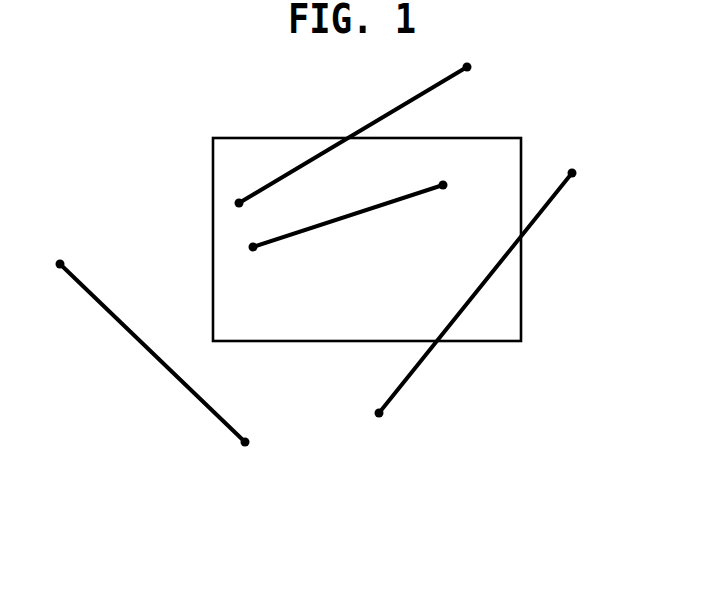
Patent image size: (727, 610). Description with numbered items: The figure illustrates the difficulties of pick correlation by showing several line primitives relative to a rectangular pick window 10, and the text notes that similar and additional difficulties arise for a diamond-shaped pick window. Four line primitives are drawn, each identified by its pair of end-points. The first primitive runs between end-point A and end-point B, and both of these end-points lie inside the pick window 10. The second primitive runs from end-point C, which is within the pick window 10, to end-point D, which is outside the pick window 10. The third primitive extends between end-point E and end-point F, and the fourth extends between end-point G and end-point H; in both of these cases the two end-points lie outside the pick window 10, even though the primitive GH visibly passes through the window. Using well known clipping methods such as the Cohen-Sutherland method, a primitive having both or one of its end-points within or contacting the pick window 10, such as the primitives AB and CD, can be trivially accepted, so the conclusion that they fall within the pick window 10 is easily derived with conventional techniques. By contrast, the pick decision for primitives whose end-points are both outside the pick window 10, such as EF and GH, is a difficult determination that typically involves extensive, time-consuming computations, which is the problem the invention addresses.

The pick window 10 is at (503, 156).
The end-point A of line primitive AB A is at (252, 265).
The end-point B of line primitive AB B is at (451, 200).
The end-point C of line primitive CD C is at (234, 189).
The end-point D of line primitive CD D is at (479, 68).
The end-point E of line primitive EF E is at (50, 265).
The end-point F of line primitive EF F is at (255, 448).
The end-point G of line primitive GH G is at (582, 171).
The end-point H of line primitive GH H is at (371, 418).